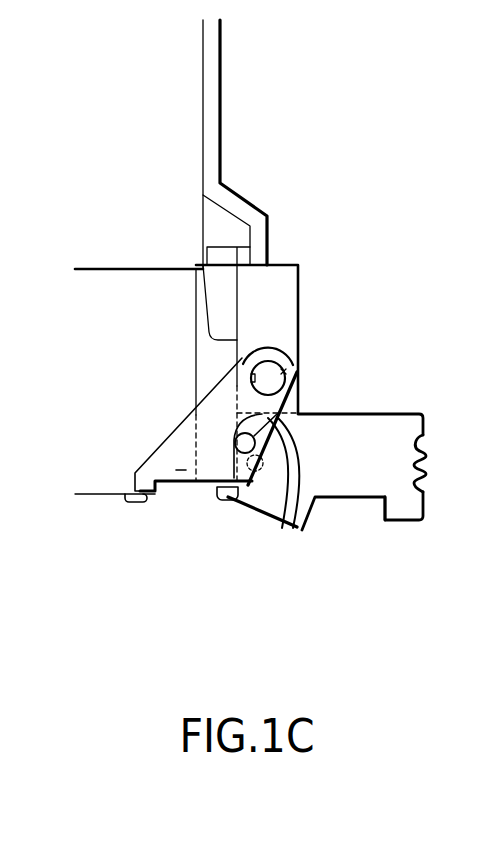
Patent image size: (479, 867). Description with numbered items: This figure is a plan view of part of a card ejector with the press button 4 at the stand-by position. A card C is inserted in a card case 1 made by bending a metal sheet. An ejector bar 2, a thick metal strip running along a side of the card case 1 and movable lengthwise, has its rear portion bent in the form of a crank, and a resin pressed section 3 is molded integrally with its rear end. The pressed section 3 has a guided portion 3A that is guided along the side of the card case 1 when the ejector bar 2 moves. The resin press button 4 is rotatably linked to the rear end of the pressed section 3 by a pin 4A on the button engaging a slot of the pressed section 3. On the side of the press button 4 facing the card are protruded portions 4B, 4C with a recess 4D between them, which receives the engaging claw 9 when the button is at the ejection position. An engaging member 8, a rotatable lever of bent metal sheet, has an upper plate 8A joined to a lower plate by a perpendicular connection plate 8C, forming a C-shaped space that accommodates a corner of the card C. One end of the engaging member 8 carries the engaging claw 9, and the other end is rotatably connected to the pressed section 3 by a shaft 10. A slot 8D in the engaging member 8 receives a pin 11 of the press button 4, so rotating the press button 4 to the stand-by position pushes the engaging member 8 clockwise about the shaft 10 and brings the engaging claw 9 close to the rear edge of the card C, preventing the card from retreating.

The card case 1 is at (175, 155).
The ejector bar 2 is at (213, 93).
The pressed section 3 is at (287, 300).
The guided portion 3A is at (222, 318).
The press button 4 is at (348, 413).
The pin 4A is at (272, 497).
The protruded portion 4B is at (408, 518).
The protruded portion 4C is at (275, 527).
The recess 4D is at (352, 497).
The engaging member 8 is at (213, 455).
The upper plate 8A is at (180, 472).
The connection plate 8C is at (150, 500).
The slot 8D is at (295, 517).
The engaging claw 9 is at (128, 507).
The shaft 10 is at (272, 372).
The pin 11 is at (232, 500).
The card C is at (150, 391).